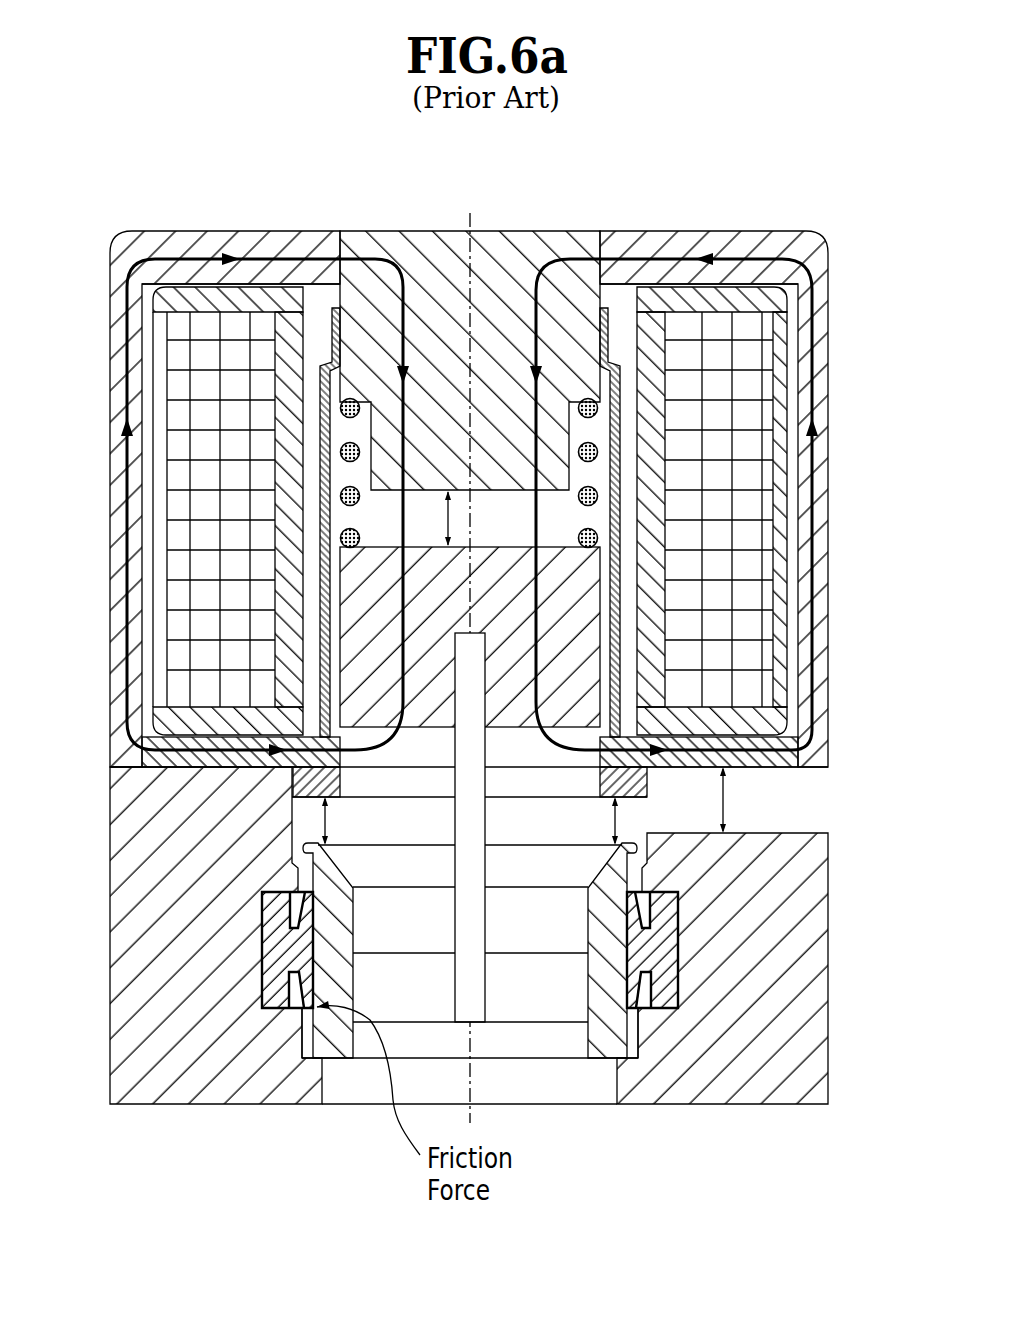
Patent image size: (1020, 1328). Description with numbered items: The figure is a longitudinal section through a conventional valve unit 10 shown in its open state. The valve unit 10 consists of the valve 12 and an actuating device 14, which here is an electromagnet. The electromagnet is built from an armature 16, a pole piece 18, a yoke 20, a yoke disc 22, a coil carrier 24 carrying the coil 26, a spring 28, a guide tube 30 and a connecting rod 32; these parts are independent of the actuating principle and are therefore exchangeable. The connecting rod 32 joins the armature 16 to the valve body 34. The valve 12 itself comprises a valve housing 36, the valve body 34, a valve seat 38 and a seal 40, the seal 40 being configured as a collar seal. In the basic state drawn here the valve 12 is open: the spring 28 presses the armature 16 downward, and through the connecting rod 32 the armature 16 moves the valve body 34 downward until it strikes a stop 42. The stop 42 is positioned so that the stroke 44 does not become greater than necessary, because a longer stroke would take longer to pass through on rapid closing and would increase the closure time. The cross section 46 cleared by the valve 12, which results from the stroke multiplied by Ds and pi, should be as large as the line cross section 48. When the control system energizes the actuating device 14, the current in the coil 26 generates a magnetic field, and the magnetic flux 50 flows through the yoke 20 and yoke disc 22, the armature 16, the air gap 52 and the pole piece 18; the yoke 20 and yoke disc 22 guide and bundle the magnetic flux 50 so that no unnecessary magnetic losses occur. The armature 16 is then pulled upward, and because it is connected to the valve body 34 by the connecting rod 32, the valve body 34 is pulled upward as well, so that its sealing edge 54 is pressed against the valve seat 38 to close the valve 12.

The valve unit 10 is at (712, 162).
The valve 12 is at (832, 962).
The actuating device 14 is at (833, 487).
The armature 16 is at (360, 597).
The pole piece 18 is at (512, 232).
The yoke 20 is at (648, 232).
The yoke disc 22 is at (173, 760).
The coil carrier 24 is at (190, 302).
The coil 26 is at (203, 657).
The spring 28 is at (342, 455).
The guide tube 30 is at (623, 403).
The connecting rod 32 is at (477, 718).
The valve body 34 is at (607, 1033).
The valve housing 36 is at (797, 1043).
The valve seat 38 is at (260, 948).
The seal 40 is at (260, 1010).
The stop 42 is at (322, 1090).
The stroke 44 is at (322, 822).
The cross section 46 is at (883, 873).
The line cross section 48 is at (723, 797).
The magnetic flux 50 is at (258, 232).
The air gap 52 is at (448, 517).
The sealing edge 54 is at (627, 953).